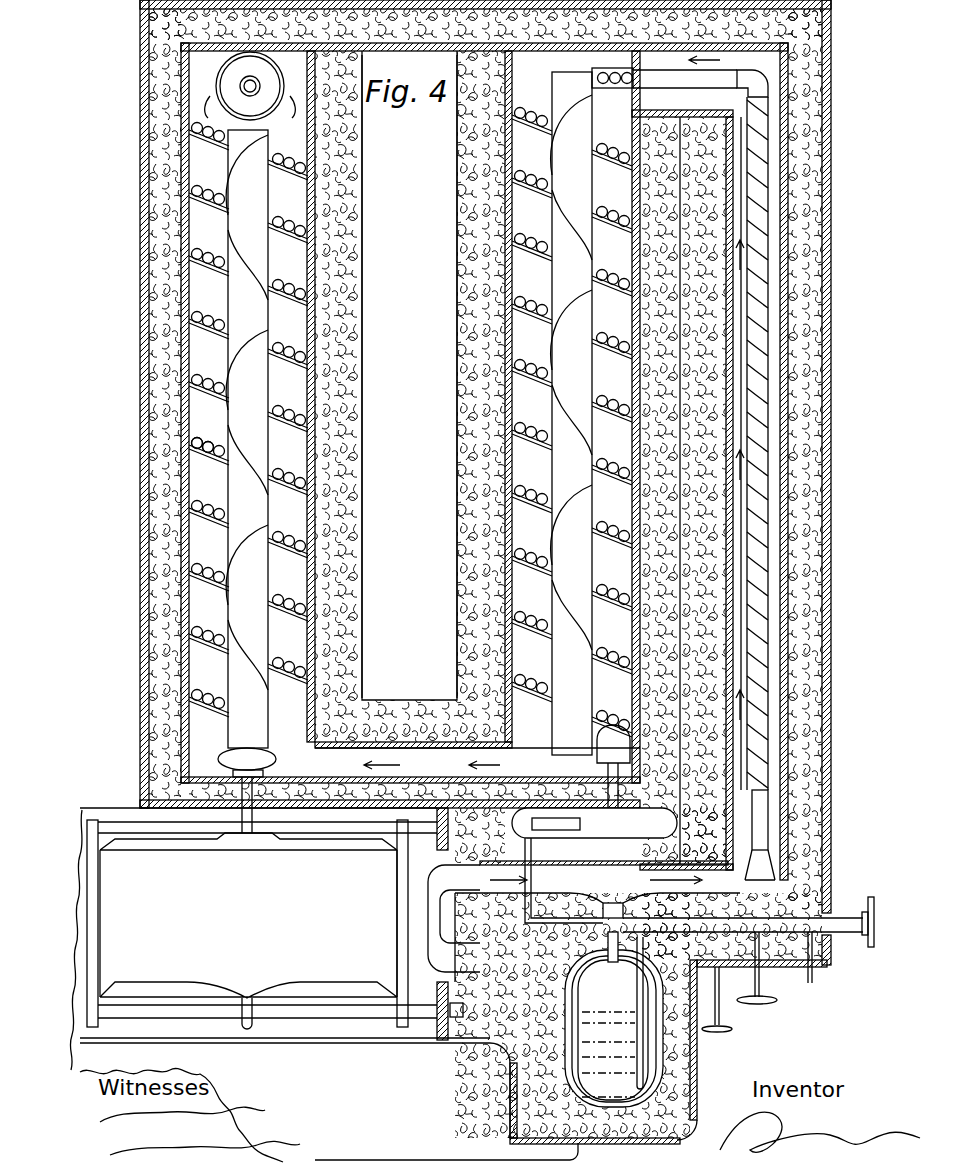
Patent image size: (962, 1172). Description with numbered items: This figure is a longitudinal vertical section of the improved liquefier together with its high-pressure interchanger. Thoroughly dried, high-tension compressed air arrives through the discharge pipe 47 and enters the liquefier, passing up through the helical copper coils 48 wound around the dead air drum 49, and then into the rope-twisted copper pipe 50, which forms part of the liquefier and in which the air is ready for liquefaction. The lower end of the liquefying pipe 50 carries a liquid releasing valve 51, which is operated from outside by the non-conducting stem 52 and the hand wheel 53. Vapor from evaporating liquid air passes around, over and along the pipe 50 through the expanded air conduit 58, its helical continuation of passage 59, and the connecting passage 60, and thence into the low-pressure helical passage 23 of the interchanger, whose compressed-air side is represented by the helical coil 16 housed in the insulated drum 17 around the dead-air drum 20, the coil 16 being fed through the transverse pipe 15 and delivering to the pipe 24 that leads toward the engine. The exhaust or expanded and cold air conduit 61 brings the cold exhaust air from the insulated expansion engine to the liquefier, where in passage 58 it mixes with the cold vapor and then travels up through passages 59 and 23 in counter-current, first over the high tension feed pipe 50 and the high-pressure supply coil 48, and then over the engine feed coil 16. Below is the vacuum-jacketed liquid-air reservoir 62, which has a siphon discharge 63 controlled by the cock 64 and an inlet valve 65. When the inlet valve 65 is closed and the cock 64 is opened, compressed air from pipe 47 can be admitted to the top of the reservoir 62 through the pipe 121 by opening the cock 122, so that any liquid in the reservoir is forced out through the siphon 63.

The transverse pipe 15 is at (244, 87).
The dead-air drum 20 is at (248, 177).
The helical passage 23 is at (200, 304).
The helical coil 16 is at (200, 394).
The insulated drum 17 is at (200, 472).
The pipe 24 is at (248, 803).
The helical copper coils 48 is at (520, 182).
The helical passage 59 is at (523, 281).
The dead air drum 49 is at (570, 399).
The expanded air conduit 58 is at (770, 203).
The rope-twisted copper pipe 50 is at (768, 345).
The liquid releasing valve 51 is at (785, 830).
The inlet valve 65 is at (842, 918).
The non-conducting stem 52 is at (828, 950).
The siphon discharge 63 is at (814, 978).
The hand wheel 53 is at (772, 1003).
The cock 64 is at (730, 1033).
The vacuum-jacketed liquid-air reservoir 62 is at (580, 1077).
The discharge pipe 47 is at (594, 865).
The pipe 121 is at (495, 880).
The cock 122 is at (650, 886).
The connecting passage 60 is at (400, 812).
The exhaust or expanded and cold air conduit 61 is at (447, 917).